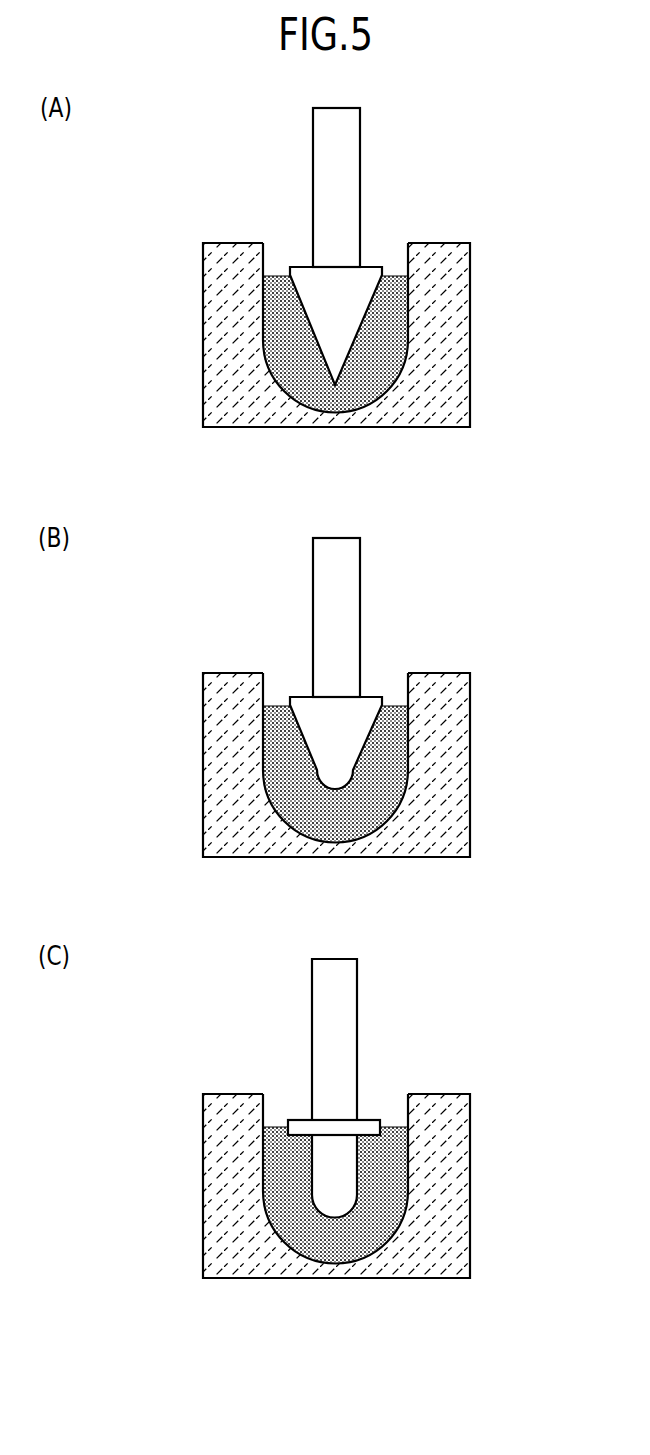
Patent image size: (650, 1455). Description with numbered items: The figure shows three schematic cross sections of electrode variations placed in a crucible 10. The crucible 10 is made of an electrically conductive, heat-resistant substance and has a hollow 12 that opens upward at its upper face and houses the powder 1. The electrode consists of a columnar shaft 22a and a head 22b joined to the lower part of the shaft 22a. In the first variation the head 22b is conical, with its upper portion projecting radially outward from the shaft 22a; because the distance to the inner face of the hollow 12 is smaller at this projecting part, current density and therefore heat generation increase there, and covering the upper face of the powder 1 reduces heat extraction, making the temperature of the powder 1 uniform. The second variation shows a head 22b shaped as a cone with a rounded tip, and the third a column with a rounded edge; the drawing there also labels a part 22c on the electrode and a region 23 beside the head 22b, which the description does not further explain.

The powder 1 is at (282, 371).
The crucible 10 is at (228, 280).
The hollow 12 is at (266, 305).
The shaft 22a is at (347, 145).
The head 22b is at (358, 297).
The flange plate 22c is at (354, 1085).
The compressed portion 23 is at (360, 325).